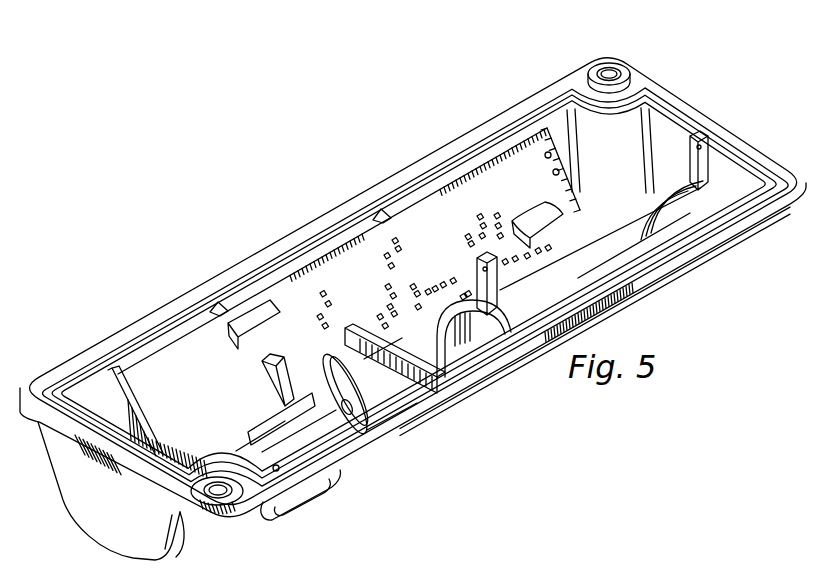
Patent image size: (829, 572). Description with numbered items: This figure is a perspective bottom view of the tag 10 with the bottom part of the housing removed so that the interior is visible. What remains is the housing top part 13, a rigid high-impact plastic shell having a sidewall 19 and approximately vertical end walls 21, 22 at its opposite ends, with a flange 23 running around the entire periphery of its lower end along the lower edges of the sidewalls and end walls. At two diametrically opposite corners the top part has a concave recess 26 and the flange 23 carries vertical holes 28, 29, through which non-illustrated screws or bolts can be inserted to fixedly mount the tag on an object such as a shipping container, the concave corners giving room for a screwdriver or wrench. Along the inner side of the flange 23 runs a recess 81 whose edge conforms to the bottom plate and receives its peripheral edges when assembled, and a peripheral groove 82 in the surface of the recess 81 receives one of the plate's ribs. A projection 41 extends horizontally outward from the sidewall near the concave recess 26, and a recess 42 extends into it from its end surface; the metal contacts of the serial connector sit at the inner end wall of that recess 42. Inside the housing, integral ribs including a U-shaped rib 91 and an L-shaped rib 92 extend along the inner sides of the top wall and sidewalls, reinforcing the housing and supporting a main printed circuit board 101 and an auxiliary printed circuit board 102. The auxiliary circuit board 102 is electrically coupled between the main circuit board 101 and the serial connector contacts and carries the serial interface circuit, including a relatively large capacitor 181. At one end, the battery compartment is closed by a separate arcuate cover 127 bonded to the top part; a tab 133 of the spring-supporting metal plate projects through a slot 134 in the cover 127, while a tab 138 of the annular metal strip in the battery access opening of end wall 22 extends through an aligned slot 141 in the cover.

The tag 10 is at (236, 148).
The housing top part 13 is at (653, 70).
The sidewall 19 is at (87, 390).
The end wall 21 is at (99, 518).
The end wall 22 is at (683, 131).
The flange 23 is at (488, 122).
The concave recess 26 is at (190, 543).
The vertical hole 28 is at (219, 484).
The vertical hole 29 is at (605, 65).
The projection 41 is at (343, 487).
The recess 42 is at (312, 500).
The recess 81 is at (776, 162).
The peripheral groove 82 is at (549, 110).
The U-shaped rib 91 is at (224, 302).
The L-shaped rib 92 is at (384, 210).
The main printed circuit board 101 is at (497, 196).
The auxiliary printed circuit board 102 is at (362, 328).
The cover 127 is at (660, 241).
The tab 133 is at (477, 264).
The slot 134 is at (486, 362).
The tab 138 is at (688, 153).
The slot 141 is at (725, 170).
The capacitor 181 is at (392, 396).